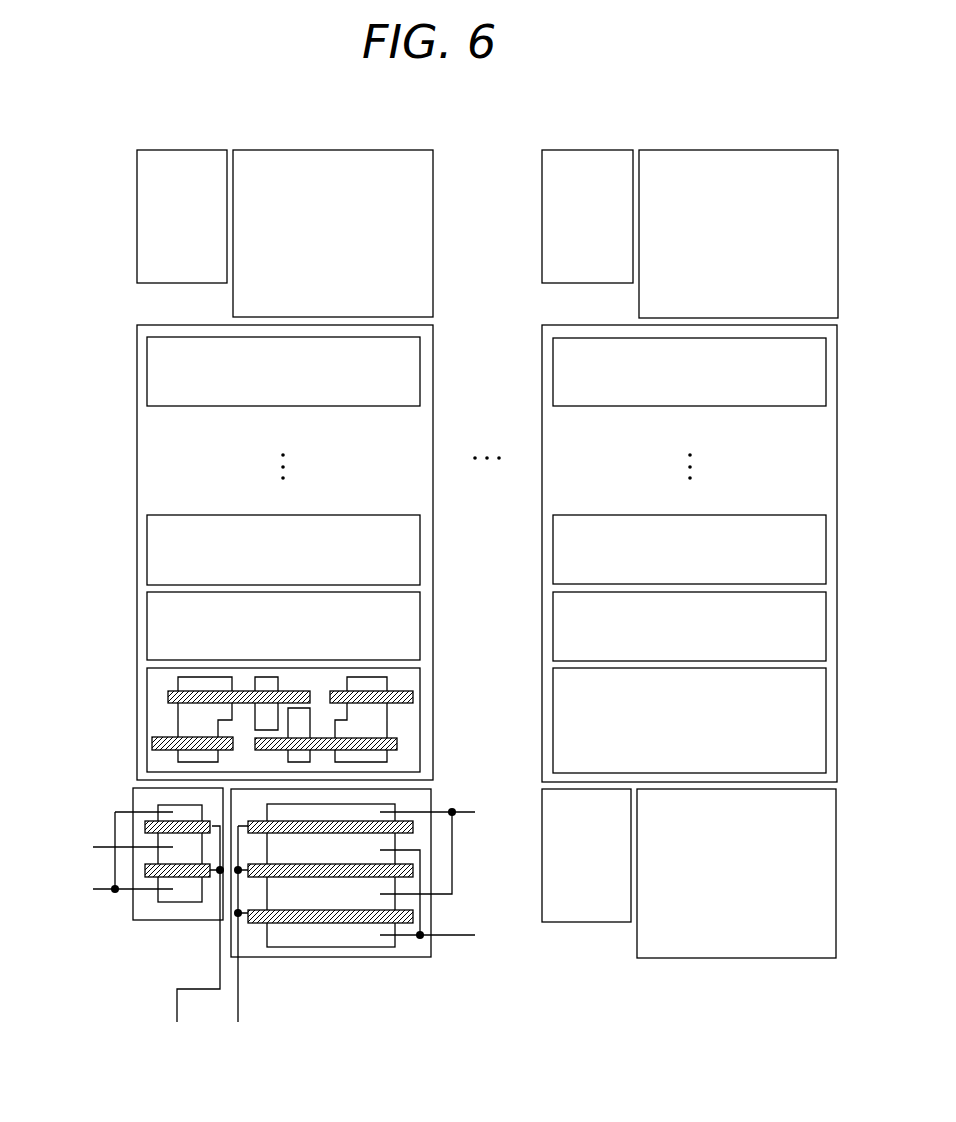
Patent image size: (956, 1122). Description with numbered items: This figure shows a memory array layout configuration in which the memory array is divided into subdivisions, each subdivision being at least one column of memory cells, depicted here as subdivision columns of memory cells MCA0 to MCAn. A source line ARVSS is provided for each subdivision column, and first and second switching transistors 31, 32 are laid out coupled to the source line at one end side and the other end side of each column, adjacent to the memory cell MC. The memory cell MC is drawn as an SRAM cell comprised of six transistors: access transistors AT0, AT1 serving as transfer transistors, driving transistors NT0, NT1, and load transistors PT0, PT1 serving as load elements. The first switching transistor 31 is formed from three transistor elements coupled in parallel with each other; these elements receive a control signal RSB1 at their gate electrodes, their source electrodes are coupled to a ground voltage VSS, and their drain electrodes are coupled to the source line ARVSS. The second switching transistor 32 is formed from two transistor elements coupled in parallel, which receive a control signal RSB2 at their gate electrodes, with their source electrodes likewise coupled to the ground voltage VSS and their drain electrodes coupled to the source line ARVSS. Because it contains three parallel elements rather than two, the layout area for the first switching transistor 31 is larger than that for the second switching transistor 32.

The first switching transistor 31 is at (387, 149).
The second switching transistor 32 is at (180, 149).
The subdivision column of memory cells MCA0 is at (137, 375).
The subdivision column of memory cells MCAn is at (541, 375).
The memory cell MC is at (147, 718).
The load transistor PT0 is at (285, 680).
The driving transistor NT0 is at (163, 677).
The access transistor AT0 is at (126, 733).
The access transistor AT1 is at (437, 677).
The driving transistor NT1 is at (400, 730).
The load transistor PT1 is at (280, 762).
The source line ARVSS is at (113, 847).
The ground voltage VSS is at (112, 890).
The control signal RSB1 is at (244, 940).
The control signal RSB2 is at (187, 940).